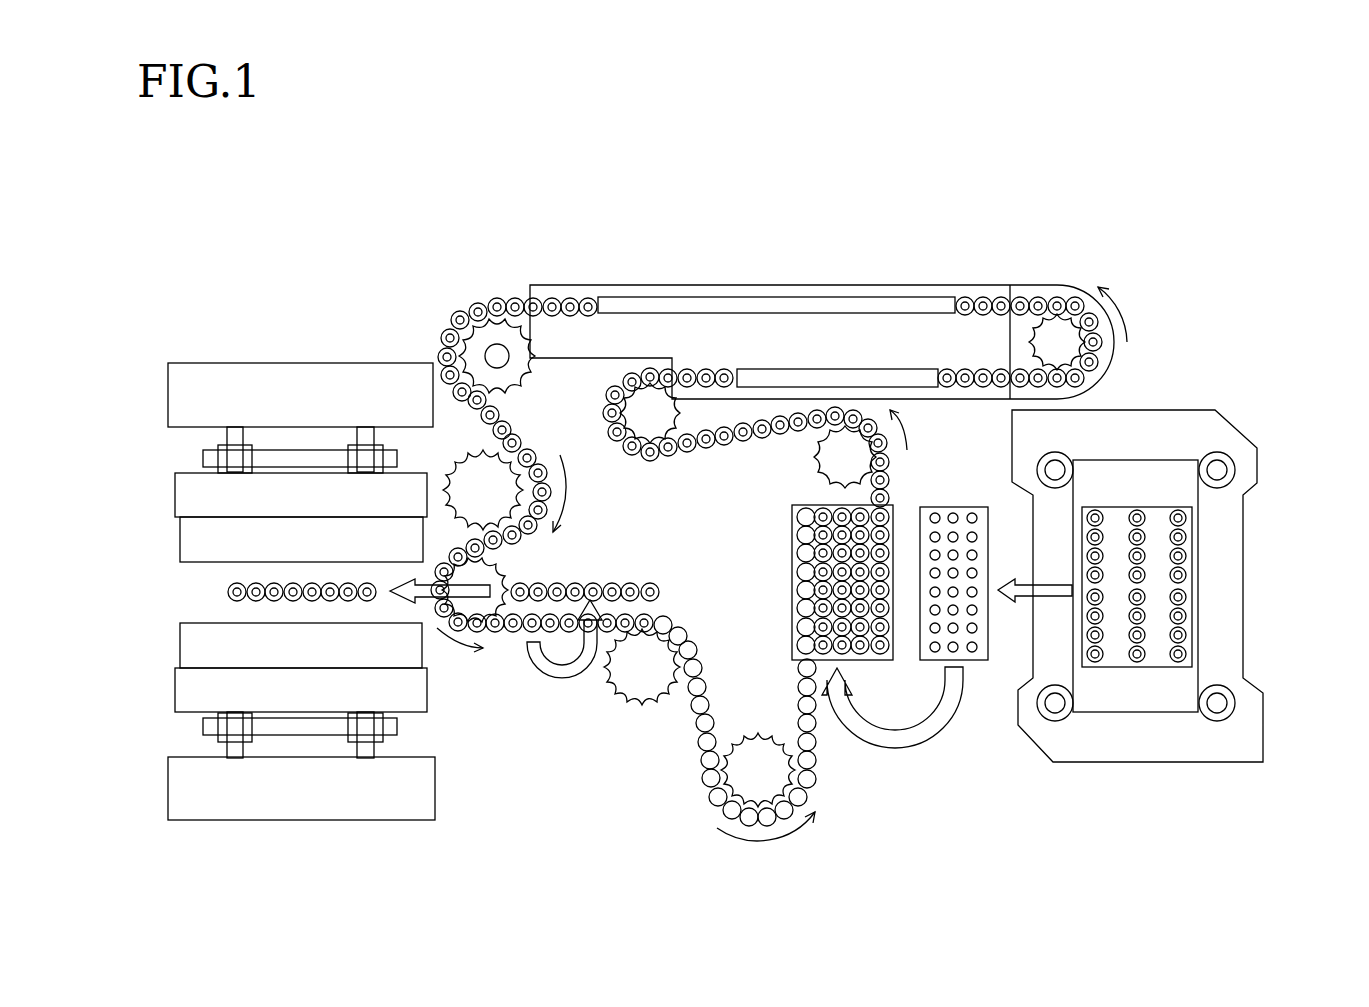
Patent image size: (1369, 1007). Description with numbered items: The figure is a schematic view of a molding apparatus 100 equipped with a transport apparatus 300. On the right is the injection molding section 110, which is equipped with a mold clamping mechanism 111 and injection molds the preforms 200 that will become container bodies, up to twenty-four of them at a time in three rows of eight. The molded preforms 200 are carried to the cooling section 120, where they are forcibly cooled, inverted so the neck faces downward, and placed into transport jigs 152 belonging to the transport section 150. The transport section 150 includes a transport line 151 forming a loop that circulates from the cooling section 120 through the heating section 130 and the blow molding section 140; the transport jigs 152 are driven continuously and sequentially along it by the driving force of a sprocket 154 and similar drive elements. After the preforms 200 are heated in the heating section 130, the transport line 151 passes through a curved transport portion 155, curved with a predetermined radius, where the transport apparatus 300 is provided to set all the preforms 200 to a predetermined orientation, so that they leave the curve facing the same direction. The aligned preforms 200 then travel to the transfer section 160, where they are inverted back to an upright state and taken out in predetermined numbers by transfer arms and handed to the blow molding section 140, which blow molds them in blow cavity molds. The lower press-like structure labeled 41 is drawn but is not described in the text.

The molding apparatus 100 is at (1113, 228).
The injection molding section 110 is at (1255, 418).
The mold clamping mechanism 111 is at (1230, 628).
The cooling section 120 is at (908, 672).
The heating section 130 is at (800, 268).
The blow molding section 140 is at (252, 325).
The lower press device 41 is at (200, 652).
The transport section 150 is at (660, 472).
The transport line 151 is at (746, 454).
The transport jig 152 is at (697, 725).
The sprocket 154 is at (810, 457).
The curved transport portion 155 is at (448, 280).
The transfer section 160 is at (566, 680).
The preform 200 is at (1178, 518).
The transport apparatus 300 is at (486, 287).